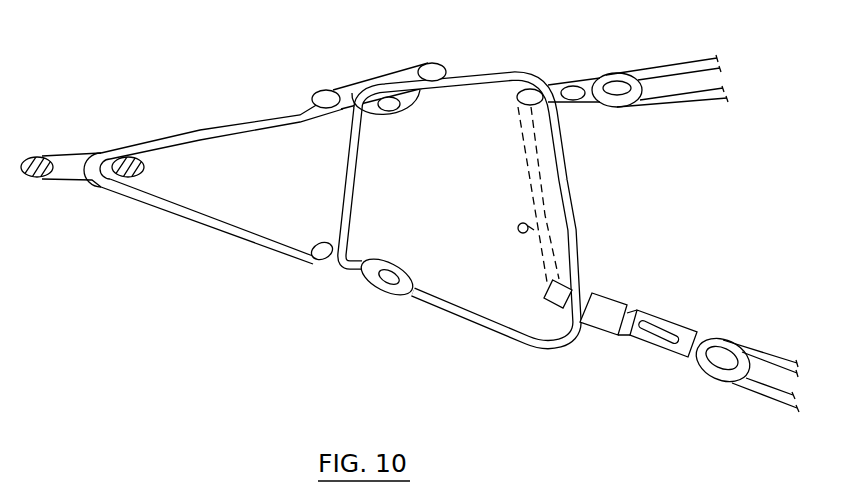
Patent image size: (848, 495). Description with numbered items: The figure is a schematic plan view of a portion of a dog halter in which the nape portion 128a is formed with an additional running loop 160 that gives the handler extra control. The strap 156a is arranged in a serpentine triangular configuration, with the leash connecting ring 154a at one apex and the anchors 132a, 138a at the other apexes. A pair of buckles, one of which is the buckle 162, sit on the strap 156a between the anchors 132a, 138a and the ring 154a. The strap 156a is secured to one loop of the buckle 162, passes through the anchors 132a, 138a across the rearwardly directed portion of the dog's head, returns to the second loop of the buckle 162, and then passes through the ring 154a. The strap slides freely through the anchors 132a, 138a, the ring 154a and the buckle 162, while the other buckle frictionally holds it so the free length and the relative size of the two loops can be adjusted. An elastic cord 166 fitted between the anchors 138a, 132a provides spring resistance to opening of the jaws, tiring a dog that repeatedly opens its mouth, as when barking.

The leash connecting ring 154a is at (40, 157).
The running loop 160 is at (213, 152).
The anchor 138a is at (572, 85).
The strap 156a is at (188, 244).
The elastic cord 166 is at (533, 230).
The buckle 162 is at (317, 250).
The nape portion 128a is at (331, 300).
The anchor 132a is at (608, 335).